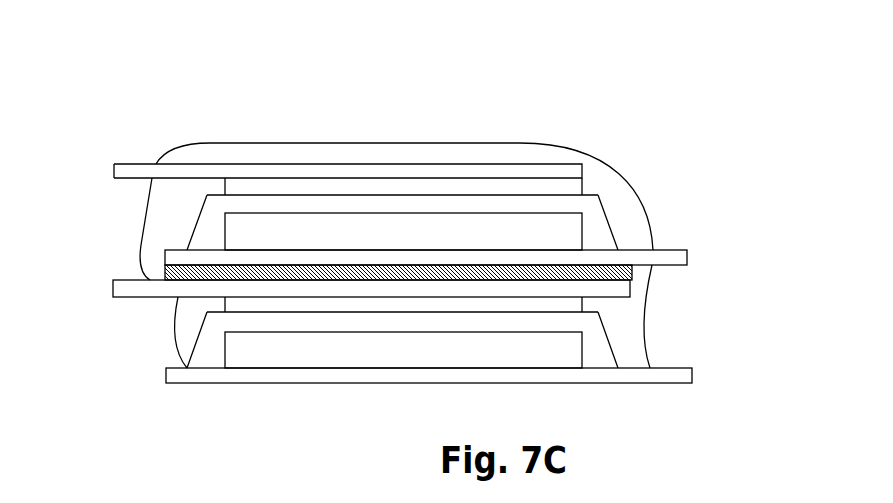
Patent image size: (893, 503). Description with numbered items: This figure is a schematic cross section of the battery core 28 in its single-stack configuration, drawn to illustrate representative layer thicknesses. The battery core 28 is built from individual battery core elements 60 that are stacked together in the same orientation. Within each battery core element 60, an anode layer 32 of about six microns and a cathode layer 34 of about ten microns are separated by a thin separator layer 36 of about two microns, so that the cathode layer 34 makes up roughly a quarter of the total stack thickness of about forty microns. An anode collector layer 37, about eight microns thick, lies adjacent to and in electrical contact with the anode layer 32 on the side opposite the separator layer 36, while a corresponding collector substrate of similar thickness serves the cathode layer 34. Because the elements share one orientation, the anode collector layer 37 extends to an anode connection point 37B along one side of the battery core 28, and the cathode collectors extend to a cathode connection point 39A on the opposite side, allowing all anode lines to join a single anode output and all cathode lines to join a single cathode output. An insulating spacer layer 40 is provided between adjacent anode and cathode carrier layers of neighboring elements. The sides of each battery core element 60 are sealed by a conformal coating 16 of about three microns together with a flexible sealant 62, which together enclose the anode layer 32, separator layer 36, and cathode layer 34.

The battery core 28 is at (93, 113).
The conformal coating 16 is at (263, 150).
The anode layer 32 is at (323, 186).
The cathode layer 34 is at (403, 290).
The separator layer 36 is at (202, 237).
The anode collector layer 37 is at (473, 163).
The anode connection point 37B is at (137, 163).
The cathode connection point 39A is at (687, 248).
The insulating spacer layer 40 is at (163, 273).
The battery core element 60 is at (668, 207).
The flexible sealant 62 is at (668, 316).